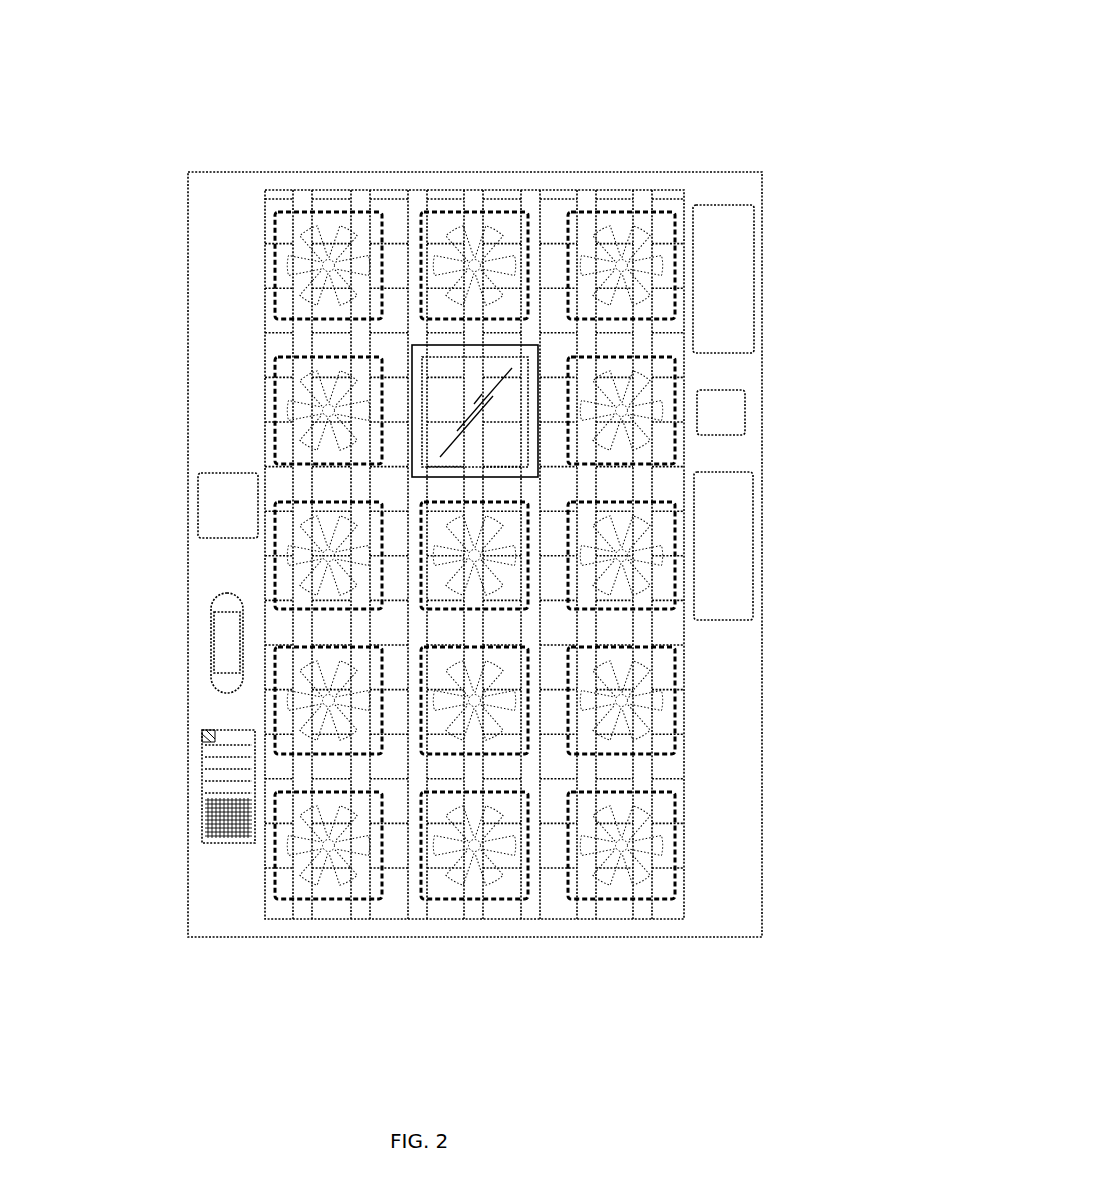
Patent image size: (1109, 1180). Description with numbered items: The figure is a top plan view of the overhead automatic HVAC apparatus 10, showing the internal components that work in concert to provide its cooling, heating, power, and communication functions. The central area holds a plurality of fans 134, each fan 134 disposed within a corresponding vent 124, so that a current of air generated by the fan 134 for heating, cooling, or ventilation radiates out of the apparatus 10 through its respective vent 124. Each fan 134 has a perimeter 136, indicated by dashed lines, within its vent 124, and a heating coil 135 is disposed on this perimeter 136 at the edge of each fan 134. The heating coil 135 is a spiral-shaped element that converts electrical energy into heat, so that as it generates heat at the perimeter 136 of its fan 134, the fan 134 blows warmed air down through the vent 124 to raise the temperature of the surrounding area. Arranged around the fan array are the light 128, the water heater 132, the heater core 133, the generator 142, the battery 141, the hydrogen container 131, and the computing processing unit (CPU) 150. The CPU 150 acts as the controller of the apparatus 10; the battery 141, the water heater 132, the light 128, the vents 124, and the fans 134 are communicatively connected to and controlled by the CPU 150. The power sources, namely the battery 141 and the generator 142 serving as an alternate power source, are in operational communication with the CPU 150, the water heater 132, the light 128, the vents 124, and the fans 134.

The overhead automatic HVAC apparatus 10 is at (694, 57).
The vent 124 is at (497, 210).
The light 128 is at (432, 373).
The hydrogen container 131 is at (211, 640).
The water heater 132 is at (735, 240).
The heater core 133 is at (737, 407).
The fan 134 is at (612, 210).
The heating coil 135 is at (676, 665).
The perimeter 136 is at (673, 843).
The battery 141 is at (198, 490).
The generator 142 is at (732, 538).
The computing processing unit (CPU) 150 is at (202, 790).